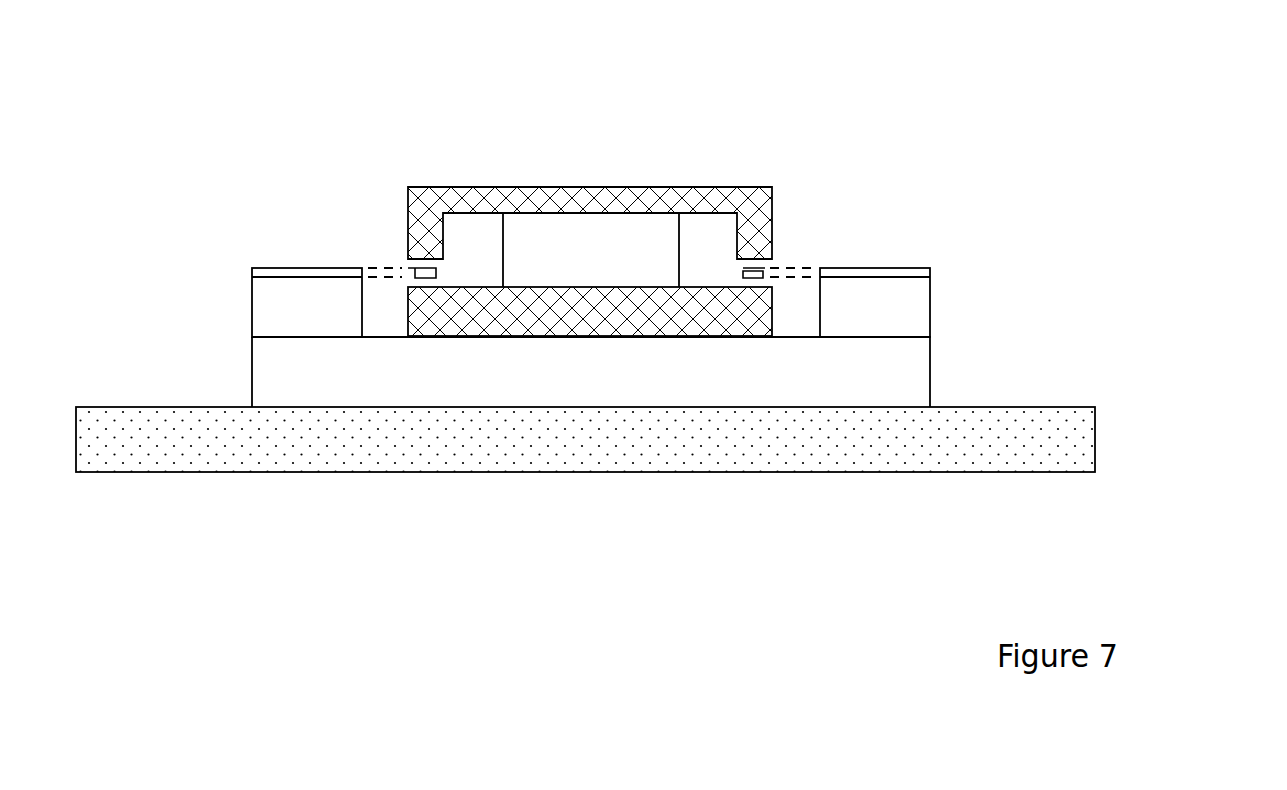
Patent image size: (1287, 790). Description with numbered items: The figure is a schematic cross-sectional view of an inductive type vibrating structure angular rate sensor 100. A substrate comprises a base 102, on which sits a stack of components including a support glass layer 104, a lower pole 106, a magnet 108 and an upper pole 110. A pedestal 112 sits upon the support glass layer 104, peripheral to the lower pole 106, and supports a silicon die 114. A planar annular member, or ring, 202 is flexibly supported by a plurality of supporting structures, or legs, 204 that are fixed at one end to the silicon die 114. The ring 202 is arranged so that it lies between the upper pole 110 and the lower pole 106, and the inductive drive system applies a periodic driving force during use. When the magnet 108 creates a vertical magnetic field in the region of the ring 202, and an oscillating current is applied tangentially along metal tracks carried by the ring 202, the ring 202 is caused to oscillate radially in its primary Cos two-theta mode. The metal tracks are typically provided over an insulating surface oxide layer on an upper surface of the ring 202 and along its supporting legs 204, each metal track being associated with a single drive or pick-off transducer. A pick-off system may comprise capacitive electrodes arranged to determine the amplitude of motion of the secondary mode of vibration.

The inductive type vibrating structure angular rate sensor 100 is at (217, 152).
The base 102 is at (1095, 438).
The support glass layer 104 is at (930, 368).
The lower pole 106 is at (770, 310).
The magnet 108 is at (529, 235).
The upper pole 110 is at (423, 217).
The pedestal 112 is at (930, 307).
The silicon die 114 is at (930, 267).
The planar annular member 202 is at (747, 268).
The supporting structures 204 is at (798, 267).